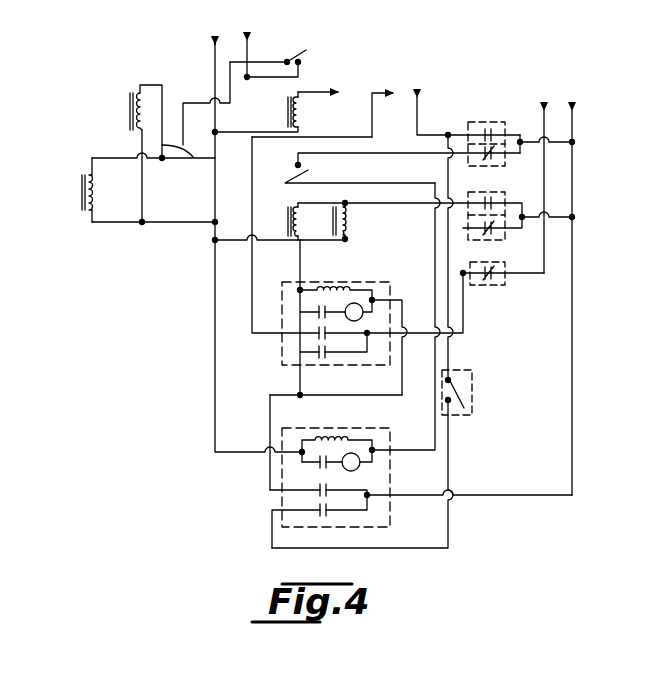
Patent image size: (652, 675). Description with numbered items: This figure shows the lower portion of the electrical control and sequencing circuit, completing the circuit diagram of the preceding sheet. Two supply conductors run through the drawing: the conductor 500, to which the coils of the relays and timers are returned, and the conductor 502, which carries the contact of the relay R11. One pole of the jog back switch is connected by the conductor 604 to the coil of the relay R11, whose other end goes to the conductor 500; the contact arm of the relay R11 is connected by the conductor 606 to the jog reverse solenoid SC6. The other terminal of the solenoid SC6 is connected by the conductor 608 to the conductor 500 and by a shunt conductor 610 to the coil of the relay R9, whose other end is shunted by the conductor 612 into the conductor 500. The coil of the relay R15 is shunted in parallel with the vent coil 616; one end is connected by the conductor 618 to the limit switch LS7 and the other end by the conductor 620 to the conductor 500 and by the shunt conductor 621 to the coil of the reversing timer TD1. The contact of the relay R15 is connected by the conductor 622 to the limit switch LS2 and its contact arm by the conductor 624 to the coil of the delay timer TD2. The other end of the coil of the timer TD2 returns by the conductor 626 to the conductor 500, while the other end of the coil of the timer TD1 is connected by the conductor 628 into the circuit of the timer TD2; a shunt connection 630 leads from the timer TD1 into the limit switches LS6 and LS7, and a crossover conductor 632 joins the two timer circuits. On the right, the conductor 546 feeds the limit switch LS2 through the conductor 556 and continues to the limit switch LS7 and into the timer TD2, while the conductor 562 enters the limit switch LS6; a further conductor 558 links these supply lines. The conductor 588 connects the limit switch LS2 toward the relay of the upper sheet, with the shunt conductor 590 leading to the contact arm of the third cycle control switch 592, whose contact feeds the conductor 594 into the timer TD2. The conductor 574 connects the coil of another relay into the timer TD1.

The conductor 500 is at (212, 58).
The conductor 502 is at (243, 39).
The conductor 546 is at (573, 117).
The conductor 556 is at (562, 143).
The connecting line 558 is at (562, 218).
The conductor 562 is at (547, 123).
The conductor 574 is at (378, 90).
The conductor 588 is at (415, 117).
The shunt conductor 590 is at (448, 173).
The third cycle control switch 592 is at (467, 390).
The conductor 594 is at (455, 491).
The conductor 604 is at (313, 91).
The conductor 606 is at (209, 102).
The conductor 608 is at (200, 223).
The shunt conductor 610 is at (187, 163).
The conductor 612 is at (143, 190).
The vent coil 616 is at (348, 235).
The conductor 618 is at (432, 203).
The conductor 620 is at (237, 245).
The shunt conductor 621 is at (300, 257).
The conductor 622 is at (390, 147).
The conductor 624 is at (382, 182).
The conductor 626 is at (250, 455).
The conductor 628 is at (363, 395).
The shunt connection 630 is at (420, 328).
The conductor 632 is at (304, 354).
The relay R9 is at (131, 123).
The relay R11 is at (277, 112).
The relay R15 is at (277, 221).
The solenoid SC6 is at (60, 195).
The timer TD1 is at (356, 318).
The timer TD2 is at (351, 472).
The limit switch LS2 is at (495, 134).
The limit switch LS7 is at (488, 205).
The limit switch LS6 is at (503, 264).